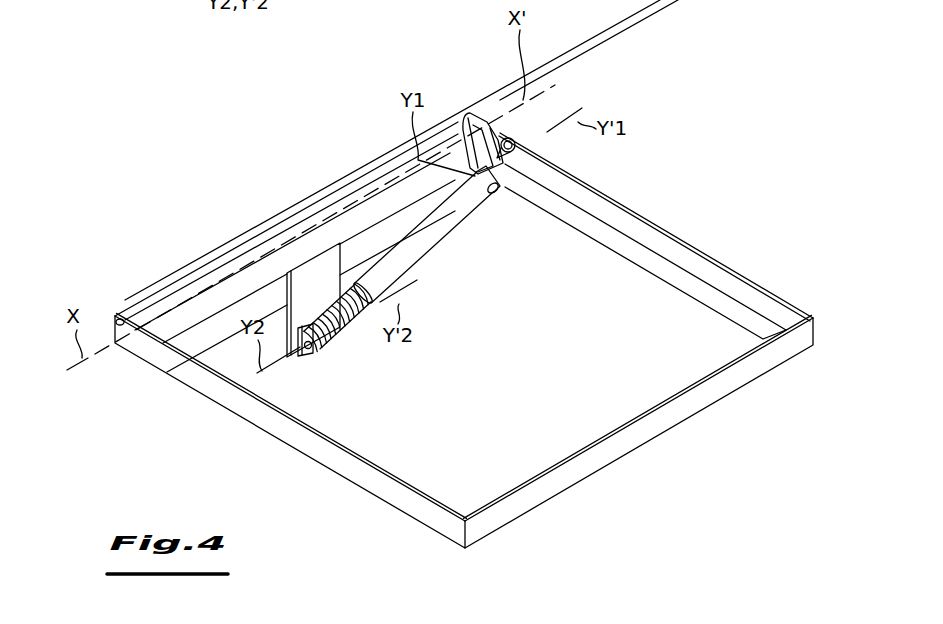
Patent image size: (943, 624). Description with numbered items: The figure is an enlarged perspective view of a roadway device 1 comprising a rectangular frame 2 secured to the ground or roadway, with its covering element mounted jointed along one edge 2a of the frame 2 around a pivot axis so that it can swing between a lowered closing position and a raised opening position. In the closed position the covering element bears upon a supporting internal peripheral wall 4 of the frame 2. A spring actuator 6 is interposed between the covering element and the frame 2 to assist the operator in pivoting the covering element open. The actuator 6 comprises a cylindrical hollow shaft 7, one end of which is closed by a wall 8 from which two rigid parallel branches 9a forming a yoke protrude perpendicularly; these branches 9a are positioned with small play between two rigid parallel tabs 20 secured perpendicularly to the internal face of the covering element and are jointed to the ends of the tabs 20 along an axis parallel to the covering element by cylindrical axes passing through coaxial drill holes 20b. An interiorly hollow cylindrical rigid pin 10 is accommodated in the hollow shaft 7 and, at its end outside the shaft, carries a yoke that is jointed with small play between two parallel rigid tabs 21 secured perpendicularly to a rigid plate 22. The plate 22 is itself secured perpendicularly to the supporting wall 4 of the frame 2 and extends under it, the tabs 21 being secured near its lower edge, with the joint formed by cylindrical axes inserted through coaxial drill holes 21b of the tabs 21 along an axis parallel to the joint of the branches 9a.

The roadway device 1 is at (355, 160).
The frame 2 is at (665, 228).
The edge of the frame 2a is at (210, 267).
The supporting internal peripheral wall 4 is at (193, 313).
The spring actuator 6 is at (427, 266).
The cylindrical hollow shaft 7 is at (450, 218).
The wall 8 is at (497, 184).
The rigid parallel branches 9a is at (493, 197).
The cylindrical rigid pin 10 is at (503, 166).
The tabs 20 is at (464, 158).
The drill hole 20b is at (456, 168).
The tabs 21 is at (302, 330).
The drill hole 21b is at (308, 354).
The plate 22 is at (313, 282).